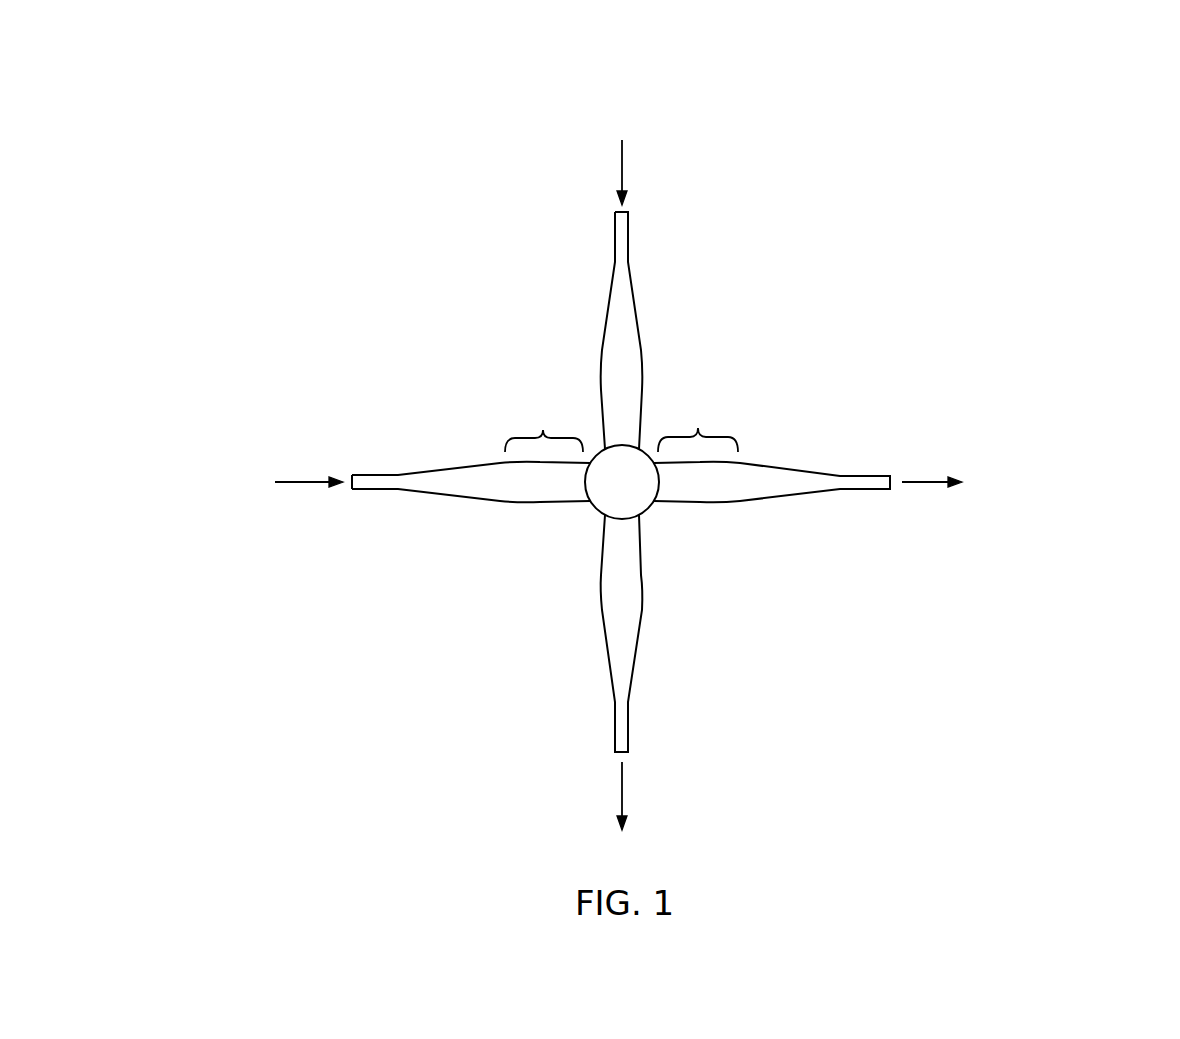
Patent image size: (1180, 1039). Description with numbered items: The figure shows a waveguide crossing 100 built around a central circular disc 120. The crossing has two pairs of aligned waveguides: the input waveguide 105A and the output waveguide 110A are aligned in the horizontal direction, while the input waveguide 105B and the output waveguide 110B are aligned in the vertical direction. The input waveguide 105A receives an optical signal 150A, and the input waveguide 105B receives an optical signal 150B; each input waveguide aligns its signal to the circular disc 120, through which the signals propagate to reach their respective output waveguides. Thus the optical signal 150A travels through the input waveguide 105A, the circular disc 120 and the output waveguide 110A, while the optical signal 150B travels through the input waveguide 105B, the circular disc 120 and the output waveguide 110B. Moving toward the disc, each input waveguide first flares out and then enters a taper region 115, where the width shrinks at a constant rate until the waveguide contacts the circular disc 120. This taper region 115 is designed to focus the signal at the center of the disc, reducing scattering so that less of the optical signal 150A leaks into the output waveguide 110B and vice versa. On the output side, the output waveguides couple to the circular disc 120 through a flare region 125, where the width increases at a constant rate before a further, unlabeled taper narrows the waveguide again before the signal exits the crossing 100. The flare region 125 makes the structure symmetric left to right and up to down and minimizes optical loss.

The waveguide crossing 100 is at (982, 100).
The input waveguide 105A is at (408, 473).
The input waveguide 105B is at (628, 258).
The output waveguide 110A is at (780, 497).
The output waveguide 110B is at (637, 643).
The taper region 115 is at (543, 430).
The circular disc 120 is at (647, 447).
The flare region 125 is at (698, 428).
The optical signal 150A is at (298, 481).
The optical signal 150B is at (622, 163).